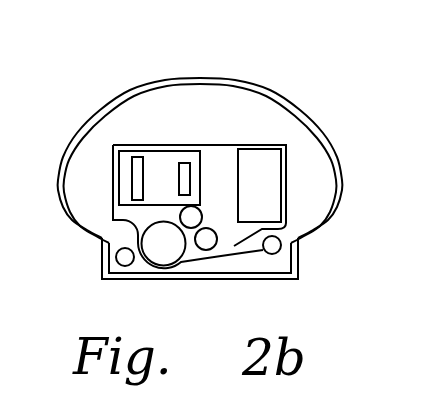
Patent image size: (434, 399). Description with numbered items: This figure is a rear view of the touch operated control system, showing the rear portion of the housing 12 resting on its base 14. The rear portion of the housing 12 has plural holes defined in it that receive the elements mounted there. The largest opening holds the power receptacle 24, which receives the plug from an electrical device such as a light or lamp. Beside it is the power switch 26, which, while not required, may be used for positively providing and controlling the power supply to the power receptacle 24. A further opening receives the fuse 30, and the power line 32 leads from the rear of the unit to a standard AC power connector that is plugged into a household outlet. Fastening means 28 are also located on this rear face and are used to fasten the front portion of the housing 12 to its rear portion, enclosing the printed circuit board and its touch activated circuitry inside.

The housing 12 is at (245, 83).
The base 14 is at (119, 278).
The power receptacle 24 is at (160, 146).
The power switch 26 is at (255, 148).
The fastening means 28 is at (192, 217).
The fuse 30 is at (156, 253).
The power line 32 is at (205, 243).